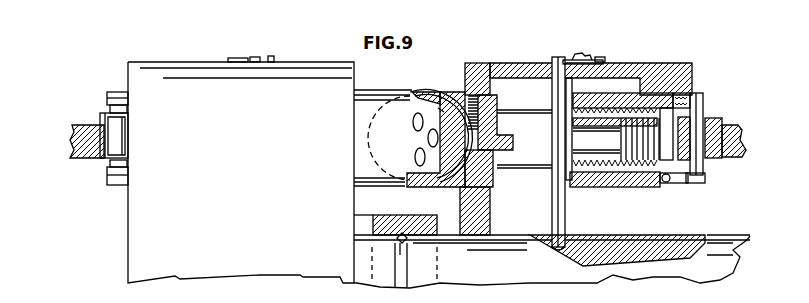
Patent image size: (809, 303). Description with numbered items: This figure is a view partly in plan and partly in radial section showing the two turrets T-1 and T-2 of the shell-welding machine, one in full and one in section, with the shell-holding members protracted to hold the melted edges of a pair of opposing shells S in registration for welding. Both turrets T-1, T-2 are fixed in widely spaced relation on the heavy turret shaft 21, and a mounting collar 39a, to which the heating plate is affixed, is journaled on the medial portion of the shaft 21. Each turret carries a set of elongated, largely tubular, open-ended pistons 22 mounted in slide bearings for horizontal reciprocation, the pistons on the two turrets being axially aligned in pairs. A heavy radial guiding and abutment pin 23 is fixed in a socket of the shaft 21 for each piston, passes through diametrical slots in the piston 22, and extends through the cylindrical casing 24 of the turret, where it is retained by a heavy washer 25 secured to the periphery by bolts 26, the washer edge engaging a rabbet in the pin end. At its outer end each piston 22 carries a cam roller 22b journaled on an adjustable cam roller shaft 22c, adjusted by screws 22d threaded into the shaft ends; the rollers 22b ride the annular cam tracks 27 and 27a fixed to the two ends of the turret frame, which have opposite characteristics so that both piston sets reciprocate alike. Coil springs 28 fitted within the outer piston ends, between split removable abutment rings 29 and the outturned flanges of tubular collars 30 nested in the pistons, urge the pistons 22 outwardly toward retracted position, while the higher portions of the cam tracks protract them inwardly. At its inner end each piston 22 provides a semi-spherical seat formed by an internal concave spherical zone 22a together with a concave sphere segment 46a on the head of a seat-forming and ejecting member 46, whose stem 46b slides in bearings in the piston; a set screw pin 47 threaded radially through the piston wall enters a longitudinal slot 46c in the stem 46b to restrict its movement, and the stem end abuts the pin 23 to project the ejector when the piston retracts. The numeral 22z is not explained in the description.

The turret shaft 21 is at (518, 280).
The piston 22 is at (368, 100).
The concave spherical zone 22a is at (533, 115).
The cam roller 22b is at (714, 130).
The cam roller shaft 22c is at (698, 97).
The screw 22d is at (672, 98).
The rotating member 22z is at (416, 97).
The guiding and abutment pin 23 is at (277, 57).
The cylindrical casing 24 is at (532, 70).
The washer 25 is at (256, 57).
The bolt 26 is at (235, 58).
The cam track 27 is at (735, 150).
The cam track 27a is at (100, 150).
The coil spring 28 is at (634, 160).
The abutment ring 29 is at (660, 176).
The tubular collar 30 is at (574, 168).
The mounting collar 39a is at (380, 222).
The ejector member 46 is at (452, 170).
The concave sphere segment 46a is at (441, 110).
The stem 46b is at (508, 150).
The longitudinal slot 46c is at (500, 130).
The set screw pin 47 is at (489, 130).
The shell S is at (400, 180).
The turret T-1 is at (690, 152).
The turret T-2 is at (298, 76).